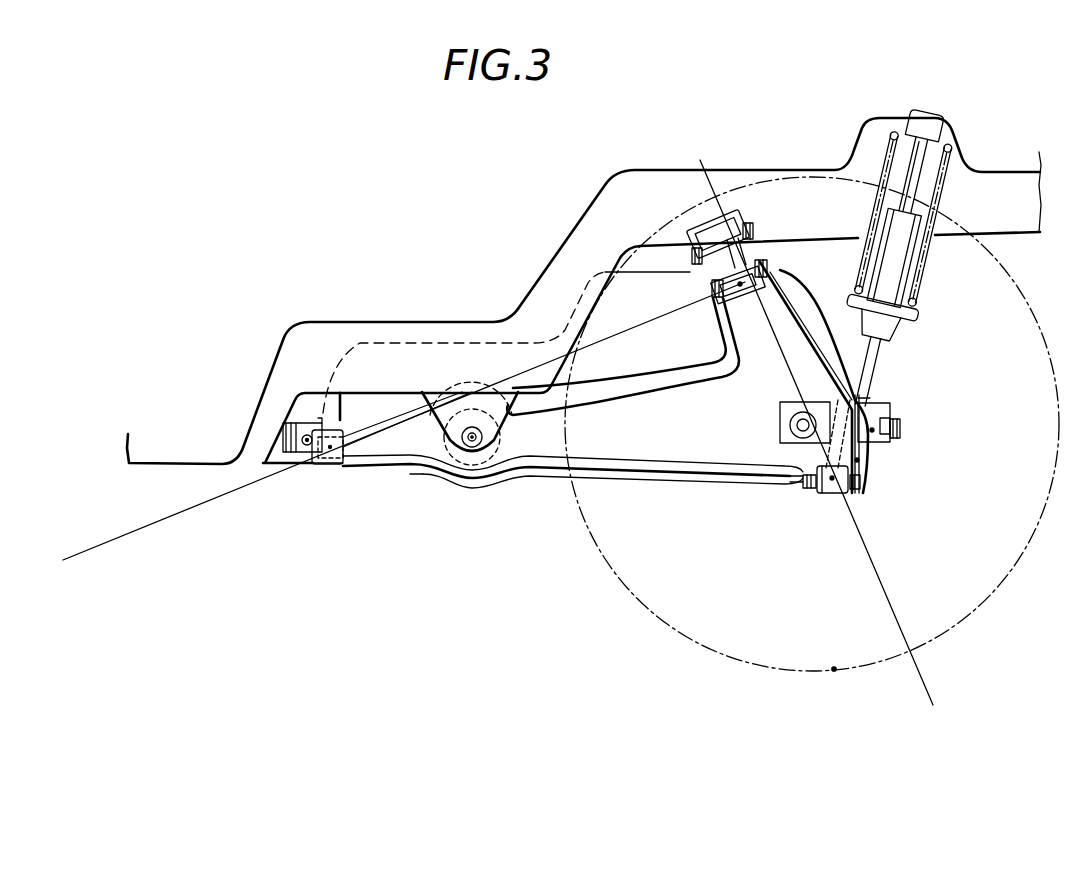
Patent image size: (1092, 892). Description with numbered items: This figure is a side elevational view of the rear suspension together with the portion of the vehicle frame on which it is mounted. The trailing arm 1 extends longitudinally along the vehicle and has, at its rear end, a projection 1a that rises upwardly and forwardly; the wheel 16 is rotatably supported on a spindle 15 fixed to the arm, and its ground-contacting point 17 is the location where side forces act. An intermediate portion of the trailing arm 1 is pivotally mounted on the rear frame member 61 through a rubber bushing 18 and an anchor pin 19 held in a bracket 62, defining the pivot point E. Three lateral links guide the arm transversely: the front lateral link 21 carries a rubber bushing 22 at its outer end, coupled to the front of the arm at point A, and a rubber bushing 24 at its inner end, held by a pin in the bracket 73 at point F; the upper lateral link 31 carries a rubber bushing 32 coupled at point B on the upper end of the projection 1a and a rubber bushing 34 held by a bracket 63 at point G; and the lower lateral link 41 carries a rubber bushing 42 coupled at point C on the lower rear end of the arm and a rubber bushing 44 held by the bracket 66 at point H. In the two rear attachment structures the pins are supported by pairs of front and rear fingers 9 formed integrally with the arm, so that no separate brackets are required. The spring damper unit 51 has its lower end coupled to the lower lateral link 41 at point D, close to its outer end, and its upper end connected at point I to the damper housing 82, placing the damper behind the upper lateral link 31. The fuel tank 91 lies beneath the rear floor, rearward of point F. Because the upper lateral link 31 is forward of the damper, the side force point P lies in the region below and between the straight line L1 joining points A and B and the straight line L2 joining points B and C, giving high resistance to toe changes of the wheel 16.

The trailing arm 1 is at (669, 473).
The projection 1a is at (777, 330).
The front and rear fingers 9 is at (768, 262).
The spindle 15 is at (790, 423).
The wheel 16 is at (598, 603).
The ground-contacting point 17 is at (1020, 570).
The rubber bushing 18 is at (476, 466).
The anchor pin 19 is at (473, 427).
The front lateral link 21 is at (305, 460).
The rubber bushing 22 is at (343, 446).
The rubber bushing 24 is at (290, 423).
The upper lateral link 31 is at (723, 262).
The rubber bushing 32 is at (735, 325).
The rubber bushing 34 is at (718, 218).
The lower lateral link 41 is at (873, 445).
The rubber bushing 42 is at (838, 497).
The rubber bushing 44 is at (888, 405).
The spring damper unit 51 is at (923, 282).
The rear frame member 61 is at (575, 245).
The bracket 62 is at (440, 455).
The bracket 63 is at (741, 222).
The bracket 66 is at (868, 398).
The bracket 73 is at (273, 457).
The damper housing 82 is at (883, 117).
The fuel tank 91 is at (450, 348).
The coupling point A is at (331, 465).
The coupling point B is at (748, 268).
The coupling point C is at (830, 488).
The coupling point D is at (870, 460).
The pivot point E is at (483, 437).
The coupling point F is at (307, 433).
The coupling point G is at (712, 227).
The coupling point H is at (875, 430).
The connection point I is at (924, 127).
The side force point P is at (839, 688).
The straight line L1 is at (100, 545).
The straight line L2 is at (928, 682).